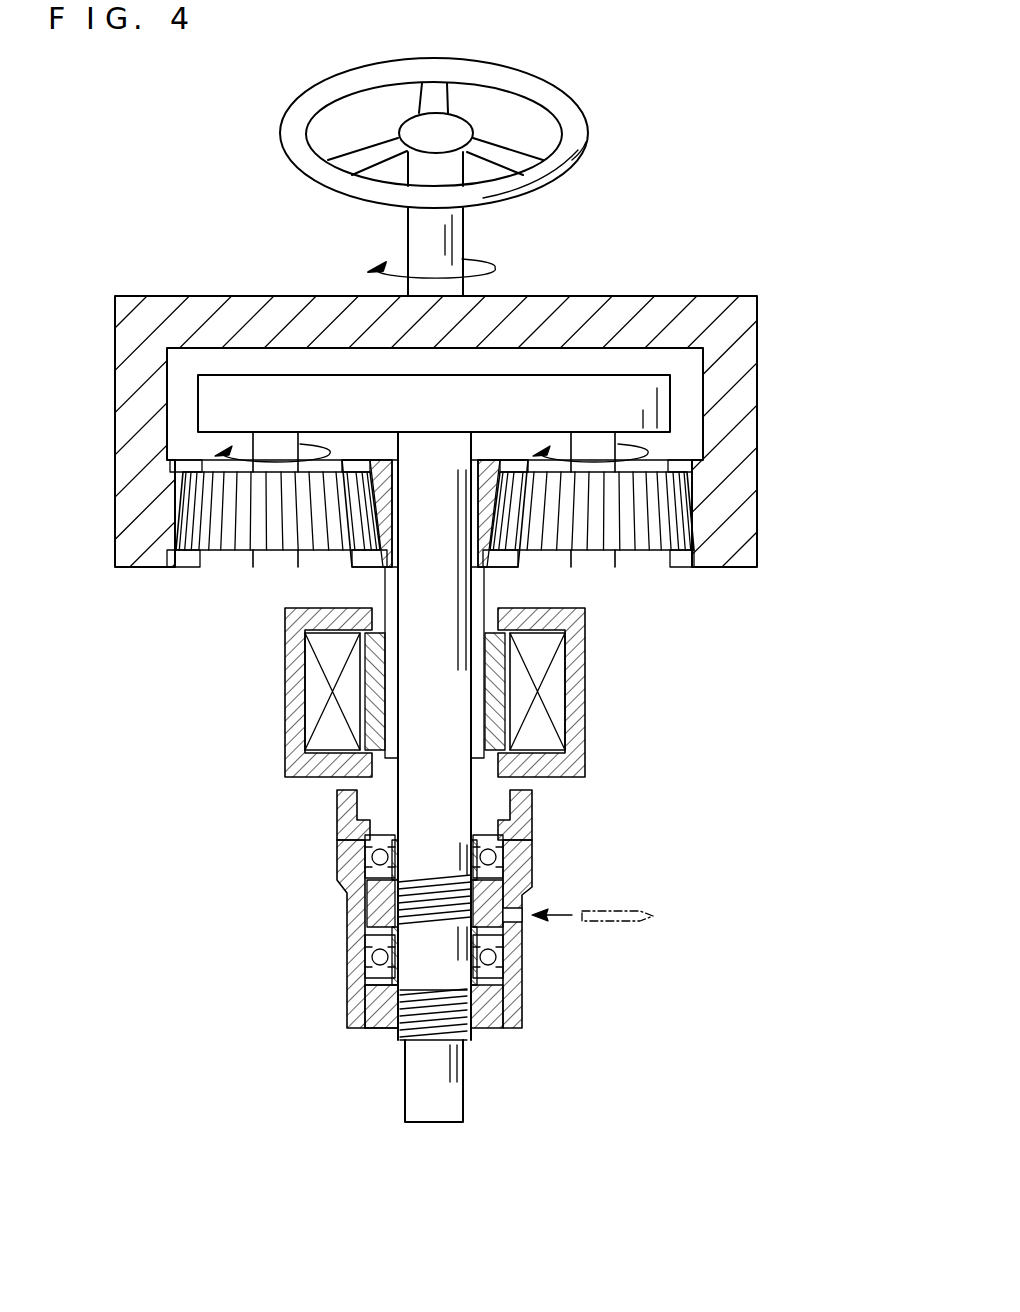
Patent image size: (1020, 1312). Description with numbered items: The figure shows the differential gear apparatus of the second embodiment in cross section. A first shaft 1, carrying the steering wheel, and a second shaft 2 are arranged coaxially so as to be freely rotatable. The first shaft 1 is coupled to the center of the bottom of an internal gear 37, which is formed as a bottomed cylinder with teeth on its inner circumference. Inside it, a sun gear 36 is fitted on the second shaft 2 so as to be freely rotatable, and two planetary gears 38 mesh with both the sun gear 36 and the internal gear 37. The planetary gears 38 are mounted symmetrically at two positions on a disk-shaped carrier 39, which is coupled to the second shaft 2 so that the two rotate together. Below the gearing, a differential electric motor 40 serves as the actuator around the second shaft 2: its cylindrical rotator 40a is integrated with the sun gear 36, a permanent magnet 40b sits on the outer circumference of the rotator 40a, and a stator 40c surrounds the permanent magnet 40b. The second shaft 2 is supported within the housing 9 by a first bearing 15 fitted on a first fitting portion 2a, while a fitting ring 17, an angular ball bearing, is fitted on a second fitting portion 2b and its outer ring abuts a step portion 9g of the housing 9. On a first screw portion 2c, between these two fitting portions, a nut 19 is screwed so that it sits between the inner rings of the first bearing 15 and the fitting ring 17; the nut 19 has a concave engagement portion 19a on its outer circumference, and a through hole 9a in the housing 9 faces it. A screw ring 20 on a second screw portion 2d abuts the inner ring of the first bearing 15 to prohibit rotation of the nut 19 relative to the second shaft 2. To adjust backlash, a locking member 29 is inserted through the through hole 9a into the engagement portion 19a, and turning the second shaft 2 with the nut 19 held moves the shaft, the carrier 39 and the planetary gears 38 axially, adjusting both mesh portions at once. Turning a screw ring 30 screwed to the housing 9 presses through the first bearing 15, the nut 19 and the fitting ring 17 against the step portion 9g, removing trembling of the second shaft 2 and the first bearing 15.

The first shaft 1 is at (463, 236).
The second shaft 2 is at (385, 777).
The first fitting portion 2a is at (345, 990).
The second fitting portion 2b is at (392, 850).
The first screw portion 2c is at (397, 897).
The second screw portion 2d is at (345, 1025).
The housing 9 is at (461, 917).
The through hole 9a is at (522, 917).
The step portion 9g is at (357, 830).
The first bearing 15 is at (368, 957).
The fitting ring 17 is at (365, 868).
The nut 19 is at (527, 887).
The engagement portion 19a is at (528, 950).
The screw ring 20 is at (390, 1035).
The locking member 29 is at (643, 921).
The screw ring 30 is at (373, 1030).
The sun gear 36 is at (362, 462).
The internal gear 37 is at (748, 434).
The planetary gears 38 is at (230, 558).
The carrier 39 is at (577, 385).
The differential electric motor 40 is at (510, 699).
The rotator 40a is at (480, 650).
The permanent magnet 40b is at (500, 687).
The stator 40c is at (555, 715).